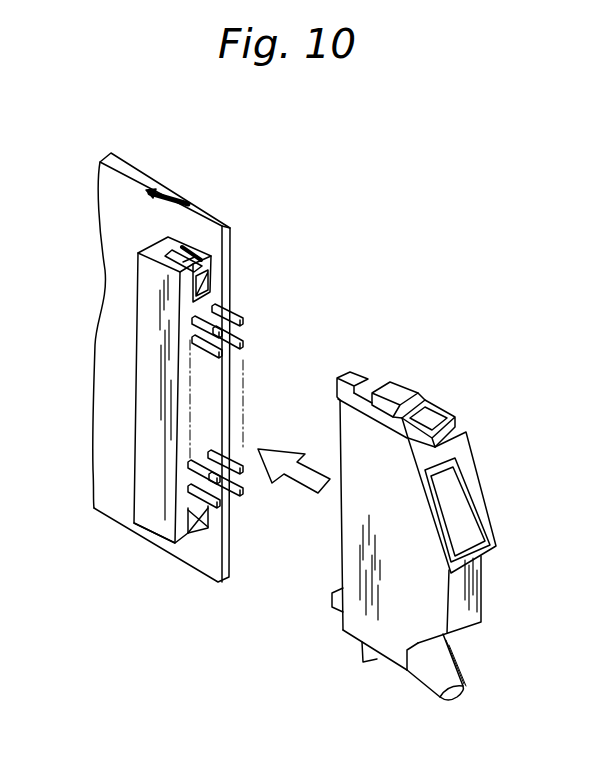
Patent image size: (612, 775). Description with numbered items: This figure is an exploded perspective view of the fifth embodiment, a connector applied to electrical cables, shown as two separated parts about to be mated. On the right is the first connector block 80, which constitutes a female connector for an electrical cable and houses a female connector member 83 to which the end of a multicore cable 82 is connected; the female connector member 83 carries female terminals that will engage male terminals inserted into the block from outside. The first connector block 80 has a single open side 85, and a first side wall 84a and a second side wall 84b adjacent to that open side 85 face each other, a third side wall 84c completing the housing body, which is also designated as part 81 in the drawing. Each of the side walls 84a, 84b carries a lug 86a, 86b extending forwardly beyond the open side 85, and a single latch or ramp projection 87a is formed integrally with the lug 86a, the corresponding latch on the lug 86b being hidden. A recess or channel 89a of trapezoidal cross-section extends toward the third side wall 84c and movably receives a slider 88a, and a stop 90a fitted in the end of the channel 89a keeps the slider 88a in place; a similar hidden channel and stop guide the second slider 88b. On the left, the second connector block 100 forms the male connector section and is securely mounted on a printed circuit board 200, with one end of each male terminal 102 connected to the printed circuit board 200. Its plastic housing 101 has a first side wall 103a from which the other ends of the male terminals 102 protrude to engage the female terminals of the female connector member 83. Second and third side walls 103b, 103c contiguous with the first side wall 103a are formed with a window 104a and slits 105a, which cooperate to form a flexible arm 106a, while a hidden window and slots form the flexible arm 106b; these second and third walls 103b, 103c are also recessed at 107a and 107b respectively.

The first connector block 80 is at (472, 447).
The plug housing 81 is at (392, 652).
The multicore cable 82 is at (458, 664).
The female connector member 83 is at (462, 498).
The first side wall 84a is at (397, 424).
The second side wall 84b is at (410, 670).
The third side wall 84c is at (490, 537).
The open side 85 is at (343, 522).
The lug 86a is at (343, 377).
The lug 86b is at (333, 608).
The latch or ramp projection 87a is at (368, 385).
The slider 88a is at (423, 390).
The slider 88b is at (362, 660).
The recess or channel 89a is at (422, 416).
The stop 90a is at (446, 415).
The second connector block 100 is at (107, 409).
The housing 101 is at (137, 340).
The male terminals 102 is at (241, 492).
The first side wall 103a is at (180, 438).
The second side wall 103b is at (170, 248).
The third side wall 103c is at (145, 532).
The window 104a is at (192, 260).
The slits 105a is at (208, 262).
The flexible arm 106a is at (178, 258).
The flexible arm 106b is at (200, 524).
The recess 107a is at (206, 285).
The recess 107b is at (196, 532).
The printed circuit board 200 is at (101, 201).